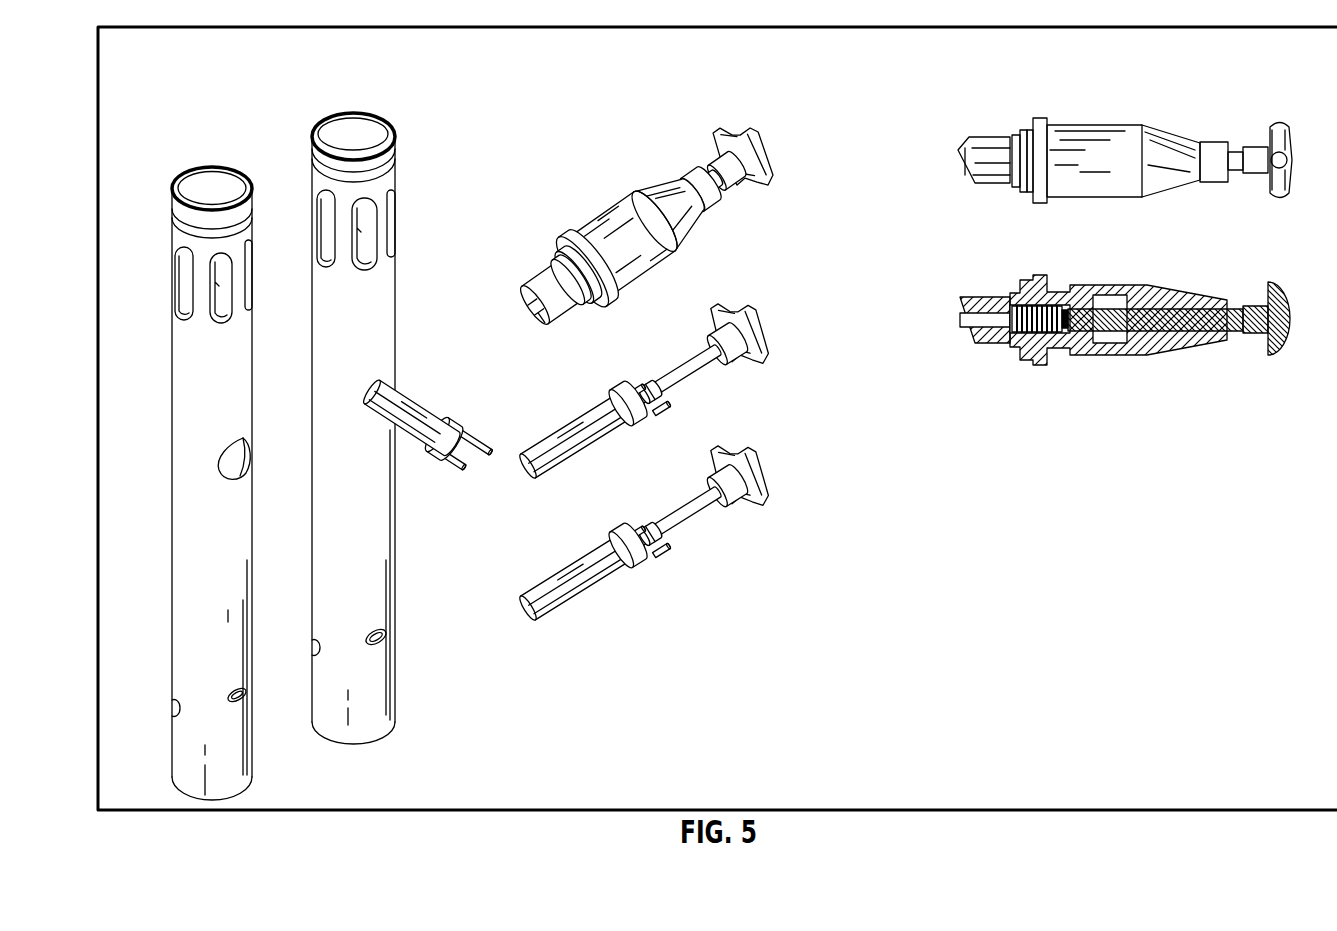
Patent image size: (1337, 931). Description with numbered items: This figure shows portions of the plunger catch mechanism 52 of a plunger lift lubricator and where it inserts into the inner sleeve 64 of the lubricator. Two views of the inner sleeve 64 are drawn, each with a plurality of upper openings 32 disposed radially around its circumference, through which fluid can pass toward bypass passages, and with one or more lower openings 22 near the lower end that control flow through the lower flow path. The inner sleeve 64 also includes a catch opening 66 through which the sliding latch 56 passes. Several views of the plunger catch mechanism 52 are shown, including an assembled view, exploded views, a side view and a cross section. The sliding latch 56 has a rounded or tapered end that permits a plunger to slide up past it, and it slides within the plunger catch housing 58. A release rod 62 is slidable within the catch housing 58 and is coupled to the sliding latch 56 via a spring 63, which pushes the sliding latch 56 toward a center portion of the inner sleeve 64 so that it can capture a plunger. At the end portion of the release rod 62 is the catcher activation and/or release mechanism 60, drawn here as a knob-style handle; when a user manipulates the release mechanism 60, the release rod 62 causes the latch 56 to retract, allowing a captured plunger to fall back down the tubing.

The lower opening 22 is at (242, 692).
The upper opening 32 is at (214, 287).
The plunger catch mechanism 52 is at (639, 185).
The sliding latch 56 is at (428, 417).
The plunger catch housing 58 is at (1157, 293).
The catcher activation and/or release mechanism 60 is at (1283, 355).
The release rod 62 is at (1203, 320).
The spring 63 is at (1047, 292).
The inner sleeve 64 is at (380, 313).
The catch opening 66 is at (228, 462).